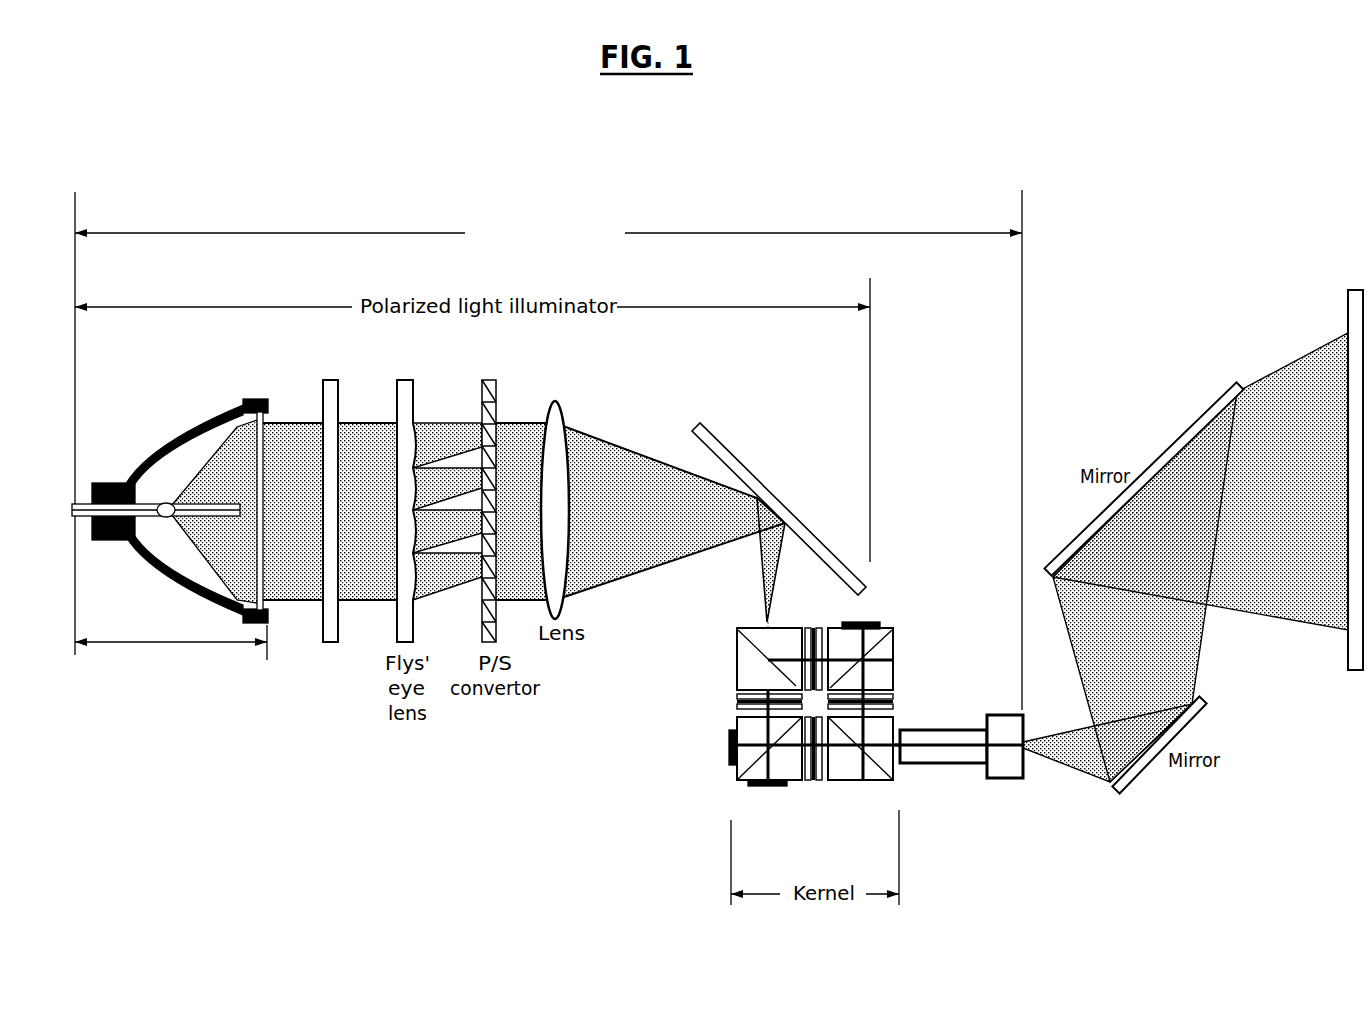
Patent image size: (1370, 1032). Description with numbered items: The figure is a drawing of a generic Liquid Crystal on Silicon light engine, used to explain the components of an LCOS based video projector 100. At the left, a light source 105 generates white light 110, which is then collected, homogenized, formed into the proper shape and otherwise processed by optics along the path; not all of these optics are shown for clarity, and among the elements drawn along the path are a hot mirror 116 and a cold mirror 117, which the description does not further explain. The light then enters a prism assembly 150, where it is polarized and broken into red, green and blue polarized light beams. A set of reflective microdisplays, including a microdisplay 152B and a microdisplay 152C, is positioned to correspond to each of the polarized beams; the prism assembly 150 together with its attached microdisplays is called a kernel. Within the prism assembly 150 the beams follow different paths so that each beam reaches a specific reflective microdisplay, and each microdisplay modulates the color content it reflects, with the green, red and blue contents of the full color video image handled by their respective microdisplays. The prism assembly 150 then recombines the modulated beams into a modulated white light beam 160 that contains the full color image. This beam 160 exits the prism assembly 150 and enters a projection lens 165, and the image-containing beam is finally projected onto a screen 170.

The LCOS based video projector 100 is at (548, 450).
The light source 105 is at (170, 573).
The white light 110 is at (306, 450).
The hot mirror 116 is at (336, 552).
The cold mirror 117 is at (779, 494).
The prism assembly 150 is at (712, 650).
The reflective microdisplay 152B is at (868, 623).
The reflective microdisplay 152C is at (760, 786).
The modulated white light beam 160 is at (940, 743).
The projection lens 165 is at (977, 772).
The screen 170 is at (1338, 646).